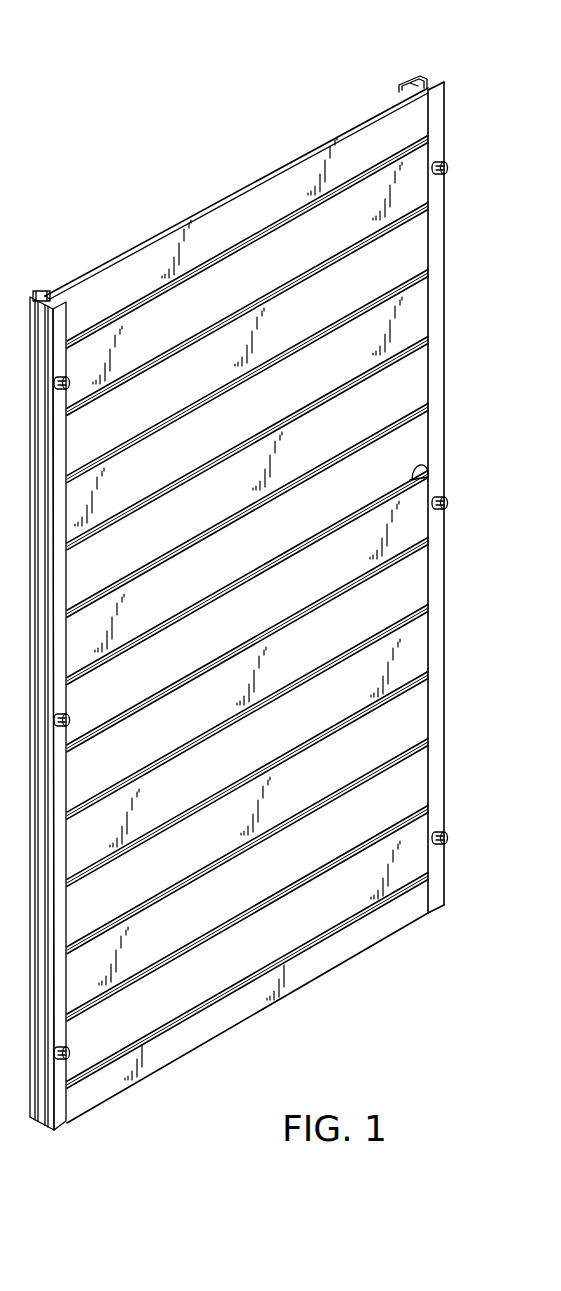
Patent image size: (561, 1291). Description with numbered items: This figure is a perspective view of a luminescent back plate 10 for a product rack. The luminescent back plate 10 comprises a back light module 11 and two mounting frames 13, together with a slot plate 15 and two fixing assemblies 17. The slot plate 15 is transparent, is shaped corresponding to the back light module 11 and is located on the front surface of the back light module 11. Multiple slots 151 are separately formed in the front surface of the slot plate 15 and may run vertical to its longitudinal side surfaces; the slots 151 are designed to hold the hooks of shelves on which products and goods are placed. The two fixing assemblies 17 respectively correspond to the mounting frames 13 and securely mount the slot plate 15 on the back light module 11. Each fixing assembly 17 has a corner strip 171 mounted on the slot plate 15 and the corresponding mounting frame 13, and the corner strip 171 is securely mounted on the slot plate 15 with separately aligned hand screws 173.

The luminescent back plate 10 is at (133, 152).
The back light module 11 is at (333, 120).
The mounting frame 13 is at (429, 71).
The slot plate 15 is at (443, 83).
The fixing assembly 17 is at (452, 304).
The corner strip 171 is at (444, 363).
The hand screw 173 is at (450, 170).
The slot 151 is at (428, 461).